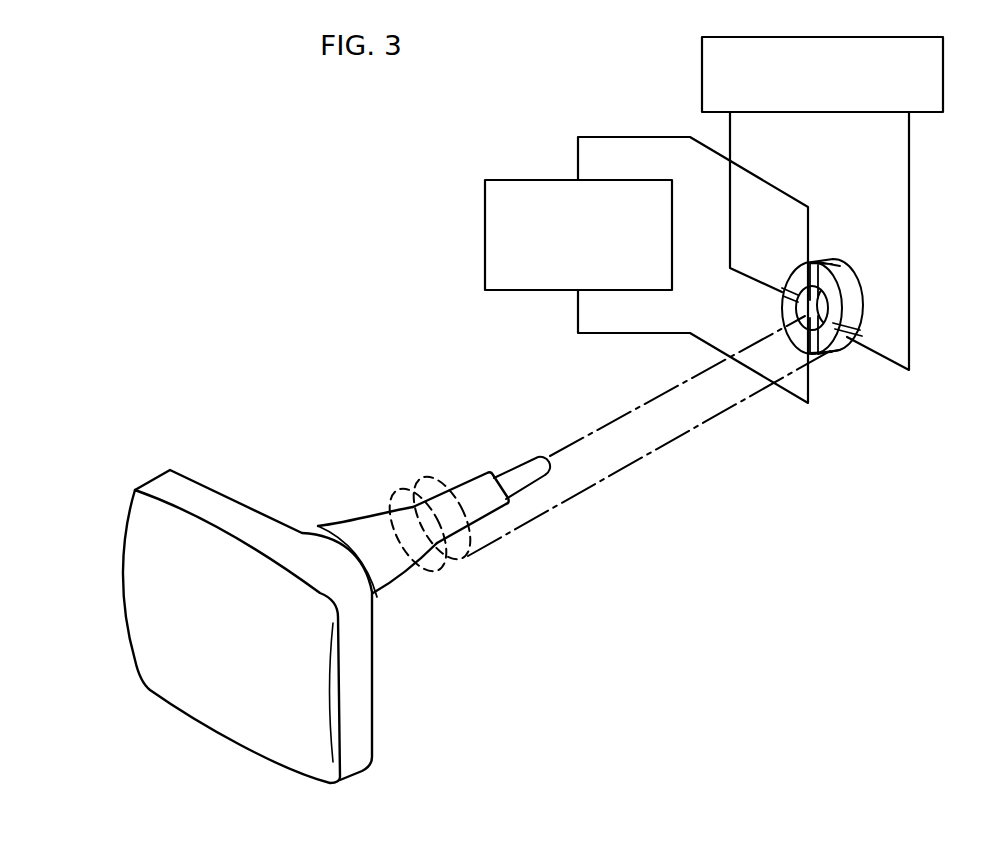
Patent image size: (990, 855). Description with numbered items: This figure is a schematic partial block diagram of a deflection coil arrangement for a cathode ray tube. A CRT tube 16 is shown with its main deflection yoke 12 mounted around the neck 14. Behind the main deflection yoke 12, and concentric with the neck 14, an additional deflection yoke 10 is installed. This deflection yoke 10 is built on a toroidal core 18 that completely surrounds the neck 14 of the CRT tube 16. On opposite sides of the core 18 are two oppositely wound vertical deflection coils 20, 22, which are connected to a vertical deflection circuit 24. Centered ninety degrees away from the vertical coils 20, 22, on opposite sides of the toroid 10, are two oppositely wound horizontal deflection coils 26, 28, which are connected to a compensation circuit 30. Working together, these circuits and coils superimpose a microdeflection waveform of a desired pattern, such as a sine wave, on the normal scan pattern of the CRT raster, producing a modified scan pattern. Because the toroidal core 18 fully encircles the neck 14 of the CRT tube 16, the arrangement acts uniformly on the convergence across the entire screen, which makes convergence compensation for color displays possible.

The deflection yoke 10 is at (812, 314).
The main deflection yoke 12 is at (357, 521).
The neck 14 is at (470, 481).
The CRT tube 16 is at (212, 483).
The toroidal core 18 is at (782, 318).
The vertical deflection coil 20 is at (830, 263).
The vertical deflection coil 22 is at (812, 360).
The vertical deflection circuit 24 is at (485, 241).
The horizontal deflection coil 26 is at (863, 315).
The horizontal deflection coil 28 is at (782, 288).
The compensation circuit 30 is at (831, 115).